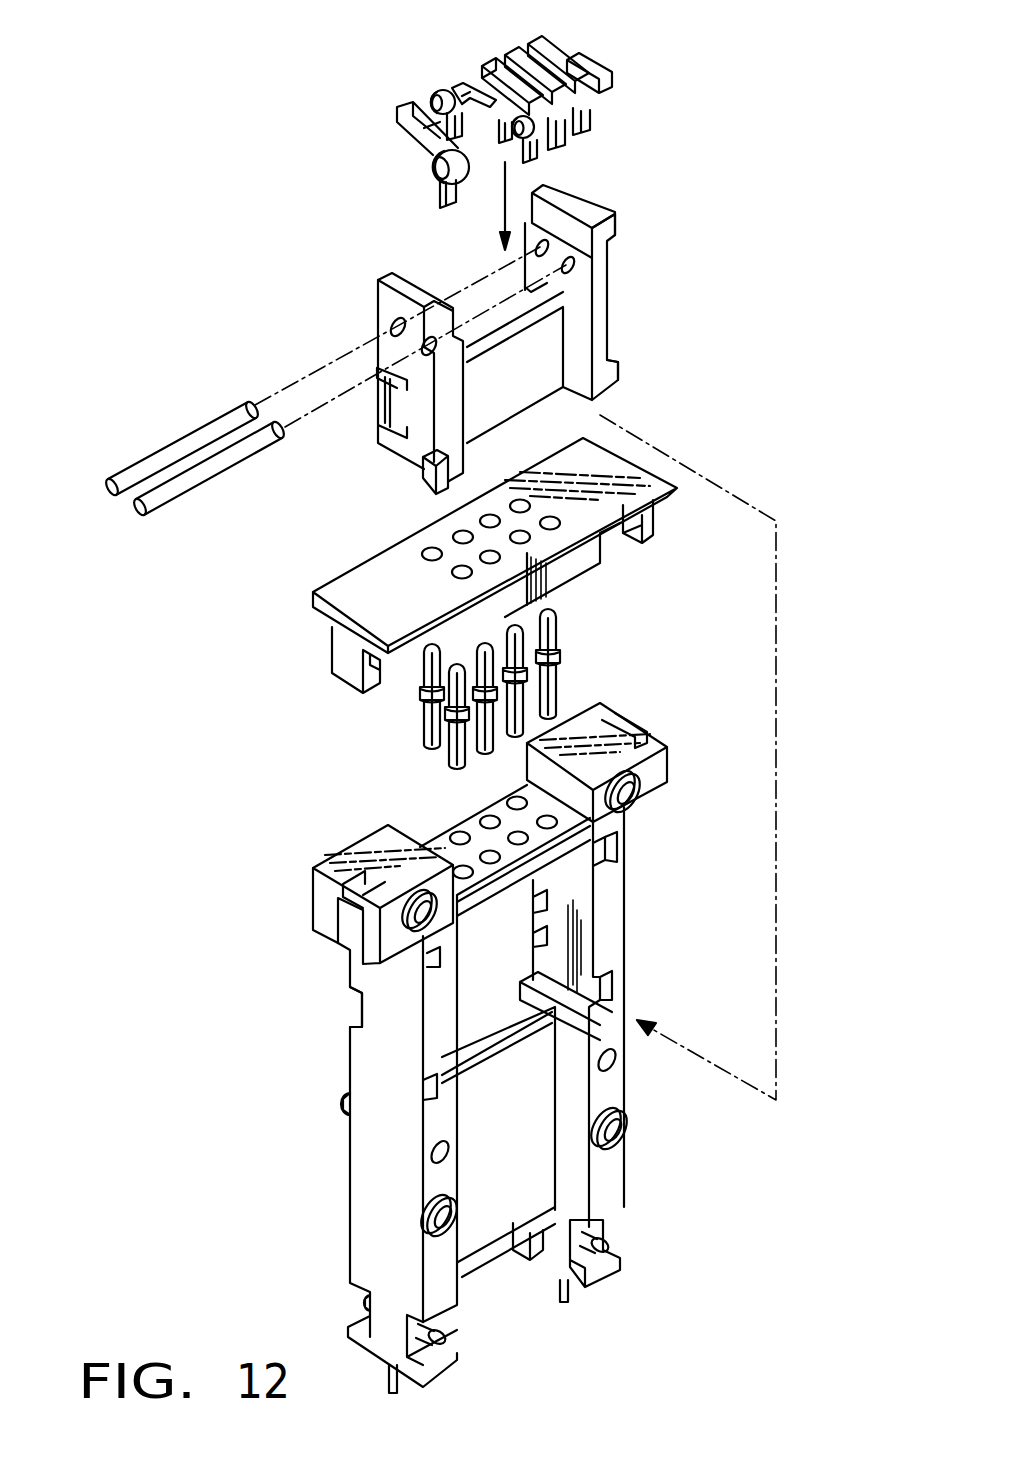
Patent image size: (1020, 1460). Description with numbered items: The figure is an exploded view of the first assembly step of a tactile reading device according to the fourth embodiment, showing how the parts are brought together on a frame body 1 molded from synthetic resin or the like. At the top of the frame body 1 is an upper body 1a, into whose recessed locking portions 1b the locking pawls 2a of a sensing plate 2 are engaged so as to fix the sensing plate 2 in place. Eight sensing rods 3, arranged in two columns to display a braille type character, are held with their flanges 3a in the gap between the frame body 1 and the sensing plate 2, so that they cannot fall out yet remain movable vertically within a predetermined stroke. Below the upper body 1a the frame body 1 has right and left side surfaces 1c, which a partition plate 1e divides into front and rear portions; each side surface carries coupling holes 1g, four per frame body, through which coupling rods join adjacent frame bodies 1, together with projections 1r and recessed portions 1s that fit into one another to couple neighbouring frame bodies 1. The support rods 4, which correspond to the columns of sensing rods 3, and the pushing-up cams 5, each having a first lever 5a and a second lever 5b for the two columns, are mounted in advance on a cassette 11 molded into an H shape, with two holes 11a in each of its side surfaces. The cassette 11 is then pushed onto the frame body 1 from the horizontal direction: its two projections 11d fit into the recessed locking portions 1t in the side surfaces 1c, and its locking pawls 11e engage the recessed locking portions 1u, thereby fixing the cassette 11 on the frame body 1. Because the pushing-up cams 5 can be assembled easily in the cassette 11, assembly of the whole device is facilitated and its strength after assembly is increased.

The frame body 1 is at (630, 1012).
The upper body 1a is at (357, 853).
The recessed locking portions 1b is at (340, 900).
The side surfaces 1c is at (367, 1050).
The partition plate 1e is at (522, 1176).
The coupling holes 1g is at (648, 797).
The projections 1r is at (343, 1113).
The recessed portions 1s is at (612, 1062).
The recessed locking portions 1t is at (616, 846).
The recessed locking portions 1u is at (350, 1003).
The sensing plate 2 is at (330, 587).
The locking pawls 2a is at (338, 668).
The sensing rods 3 is at (522, 679).
The flanges 3a is at (560, 648).
The support rods 4 is at (187, 435).
The pushing-up cams 5 is at (423, 148).
The first lever 5a is at (450, 208).
The second lever 5b is at (530, 46).
The cassette 11 is at (610, 330).
The holes 11a is at (390, 325).
The projections 11d is at (618, 228).
The locking pawls 11e is at (377, 405).